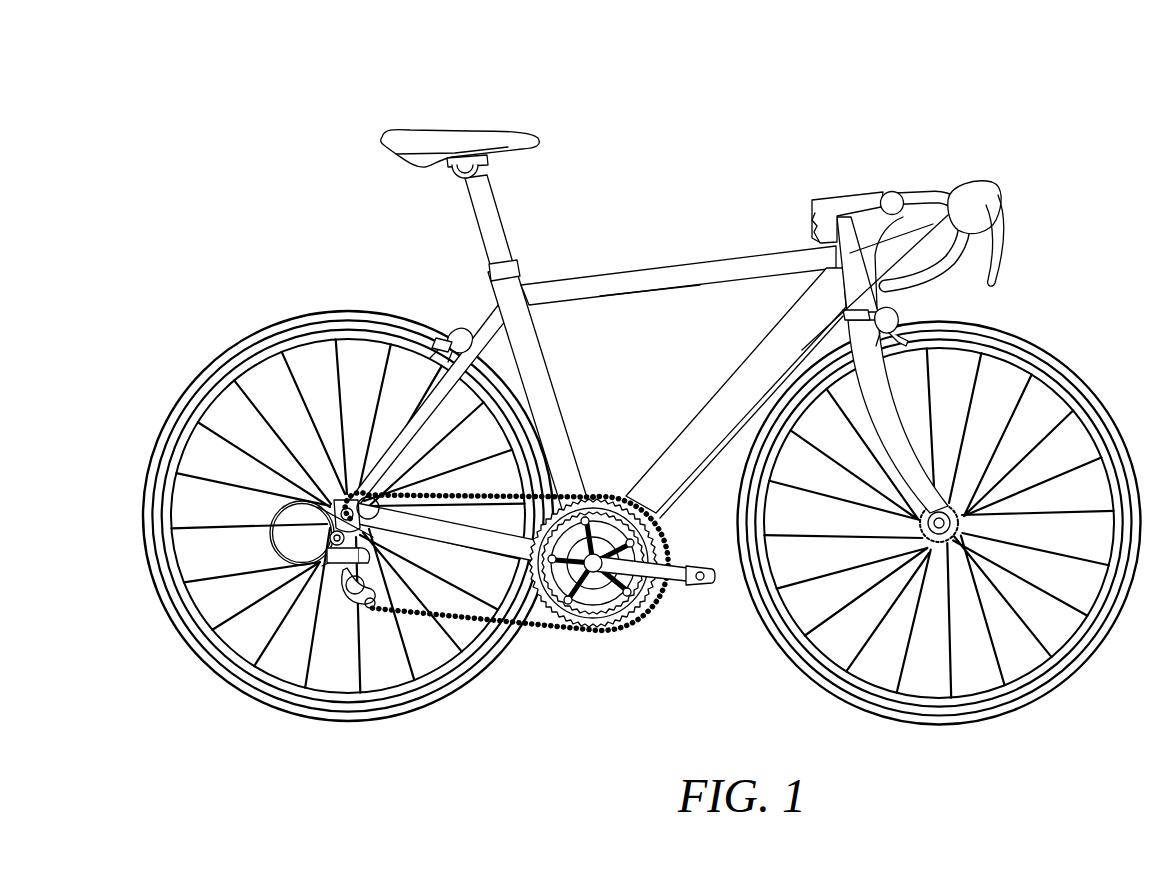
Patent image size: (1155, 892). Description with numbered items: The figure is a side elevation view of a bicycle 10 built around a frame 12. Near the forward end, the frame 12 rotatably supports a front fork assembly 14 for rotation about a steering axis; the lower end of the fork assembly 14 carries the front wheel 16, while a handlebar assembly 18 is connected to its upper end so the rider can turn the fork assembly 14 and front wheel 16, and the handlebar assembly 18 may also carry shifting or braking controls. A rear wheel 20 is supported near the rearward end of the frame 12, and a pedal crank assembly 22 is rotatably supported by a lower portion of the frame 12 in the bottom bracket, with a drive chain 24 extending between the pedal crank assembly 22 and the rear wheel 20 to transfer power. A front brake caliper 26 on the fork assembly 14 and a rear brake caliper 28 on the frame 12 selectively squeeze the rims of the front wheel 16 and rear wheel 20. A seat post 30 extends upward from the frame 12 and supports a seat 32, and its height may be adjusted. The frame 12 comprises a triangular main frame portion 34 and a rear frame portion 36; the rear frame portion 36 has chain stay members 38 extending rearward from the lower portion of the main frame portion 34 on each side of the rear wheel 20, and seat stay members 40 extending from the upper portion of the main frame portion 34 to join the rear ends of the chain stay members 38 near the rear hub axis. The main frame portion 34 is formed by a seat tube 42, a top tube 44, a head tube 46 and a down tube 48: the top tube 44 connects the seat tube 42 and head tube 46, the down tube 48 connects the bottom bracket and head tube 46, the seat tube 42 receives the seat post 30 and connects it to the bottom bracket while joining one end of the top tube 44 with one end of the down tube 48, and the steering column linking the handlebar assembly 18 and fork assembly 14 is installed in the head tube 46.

The bicycle 10 is at (713, 146).
The frame 12 is at (606, 358).
The front fork assembly 14 is at (880, 378).
The front wheel 16 is at (1062, 340).
The handlebar assembly 18 is at (918, 188).
The rear wheel 20 is at (292, 320).
The pedal crank assembly 22 is at (678, 578).
The drive chain 24 is at (455, 622).
The front brake caliper 26 is at (897, 318).
The rear brake caliper 28 is at (456, 330).
The seat post 30 is at (500, 240).
The seat 32 is at (472, 128).
The main frame portion 34 is at (698, 287).
The rear frame portion 36 is at (325, 484).
The chain stay members 38 is at (425, 535).
The seat stay members 40 is at (430, 408).
The seat tube 42 is at (545, 398).
The top tube 44 is at (623, 292).
The head tube 46 is at (841, 262).
The down tube 48 is at (697, 437).